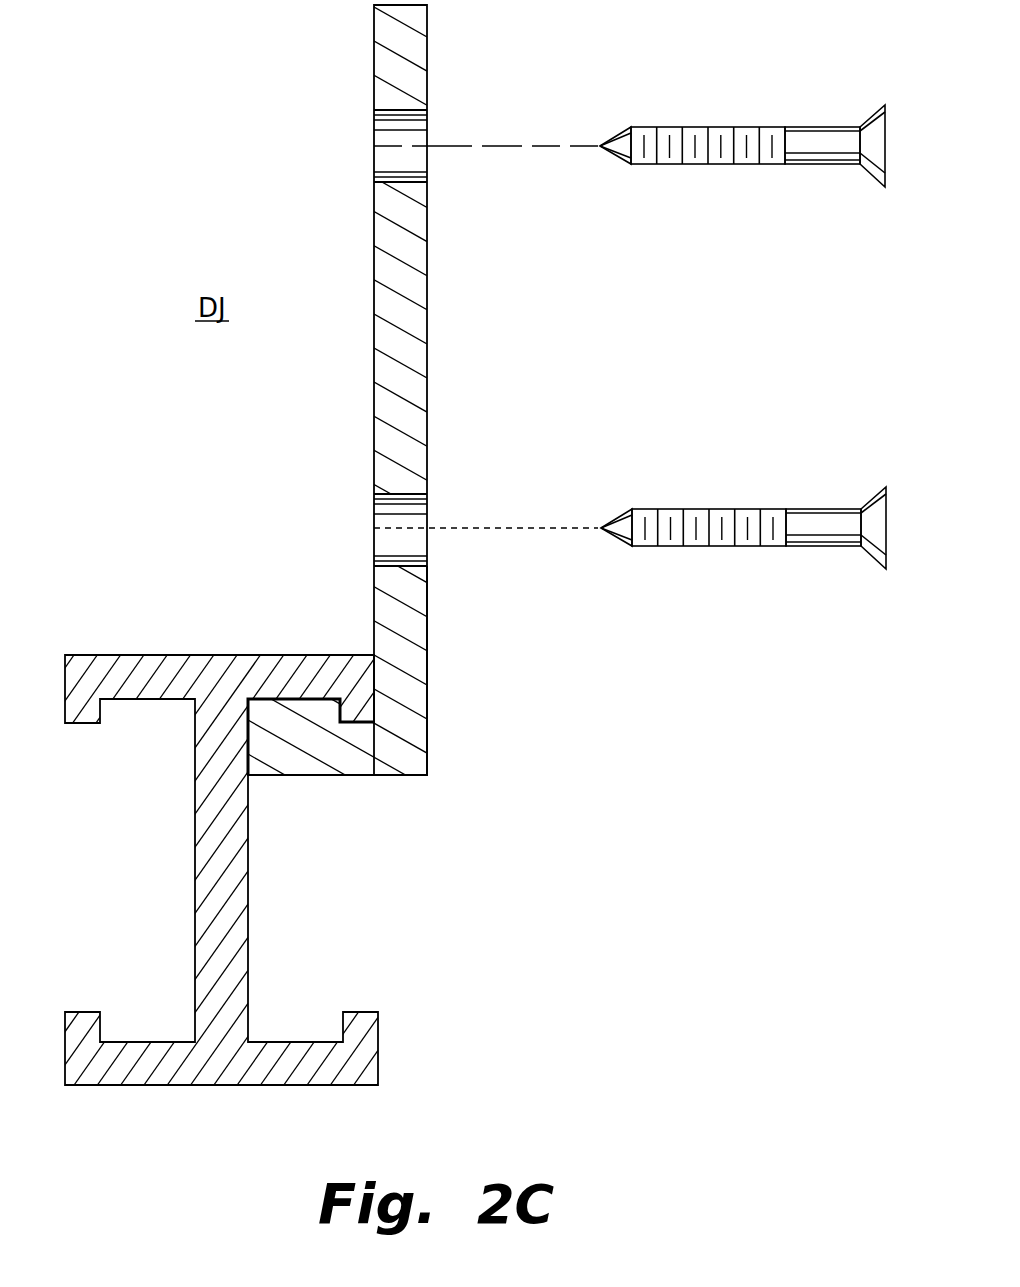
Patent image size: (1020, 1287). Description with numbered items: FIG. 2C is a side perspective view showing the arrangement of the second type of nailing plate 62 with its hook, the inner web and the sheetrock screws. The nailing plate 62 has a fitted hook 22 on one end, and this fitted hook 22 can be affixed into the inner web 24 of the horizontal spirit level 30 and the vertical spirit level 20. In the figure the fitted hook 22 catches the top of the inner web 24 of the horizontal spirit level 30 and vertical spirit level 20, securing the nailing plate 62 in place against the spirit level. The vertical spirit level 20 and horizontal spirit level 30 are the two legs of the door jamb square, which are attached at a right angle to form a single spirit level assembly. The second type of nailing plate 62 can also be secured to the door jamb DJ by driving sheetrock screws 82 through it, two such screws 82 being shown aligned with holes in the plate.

The vertical spirit level 20 is at (351, 837).
The horizontal spirit level 30 is at (107, 666).
The inner web 24 is at (283, 702).
The fitted hook 22 is at (345, 778).
The second type of nailing plate 62 is at (374, 365).
The sheetrock screws 82 is at (803, 165).